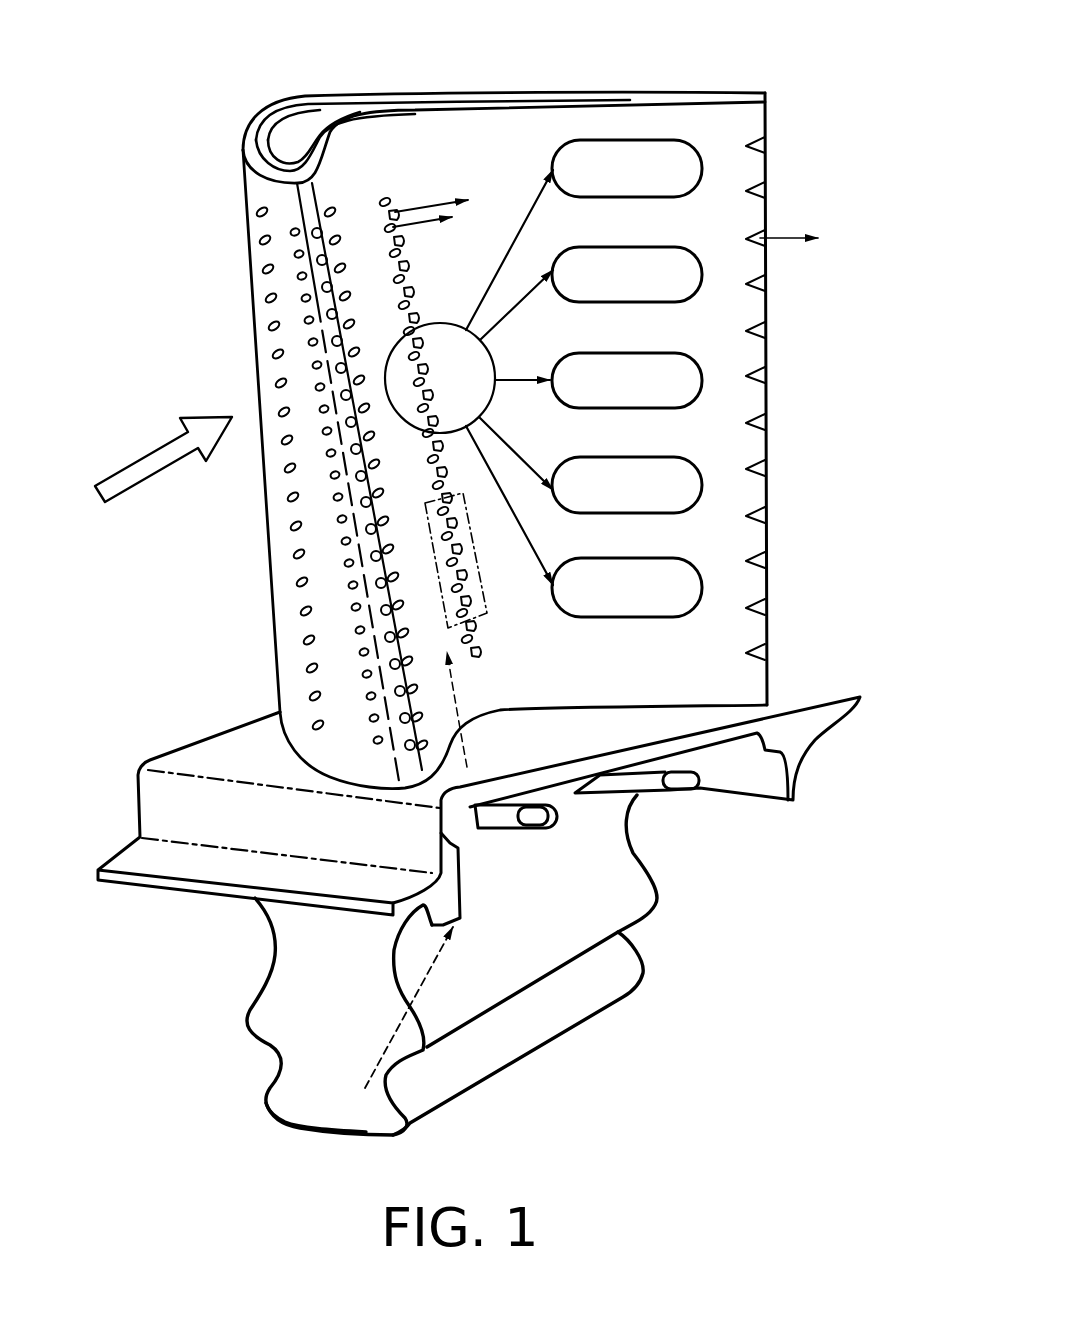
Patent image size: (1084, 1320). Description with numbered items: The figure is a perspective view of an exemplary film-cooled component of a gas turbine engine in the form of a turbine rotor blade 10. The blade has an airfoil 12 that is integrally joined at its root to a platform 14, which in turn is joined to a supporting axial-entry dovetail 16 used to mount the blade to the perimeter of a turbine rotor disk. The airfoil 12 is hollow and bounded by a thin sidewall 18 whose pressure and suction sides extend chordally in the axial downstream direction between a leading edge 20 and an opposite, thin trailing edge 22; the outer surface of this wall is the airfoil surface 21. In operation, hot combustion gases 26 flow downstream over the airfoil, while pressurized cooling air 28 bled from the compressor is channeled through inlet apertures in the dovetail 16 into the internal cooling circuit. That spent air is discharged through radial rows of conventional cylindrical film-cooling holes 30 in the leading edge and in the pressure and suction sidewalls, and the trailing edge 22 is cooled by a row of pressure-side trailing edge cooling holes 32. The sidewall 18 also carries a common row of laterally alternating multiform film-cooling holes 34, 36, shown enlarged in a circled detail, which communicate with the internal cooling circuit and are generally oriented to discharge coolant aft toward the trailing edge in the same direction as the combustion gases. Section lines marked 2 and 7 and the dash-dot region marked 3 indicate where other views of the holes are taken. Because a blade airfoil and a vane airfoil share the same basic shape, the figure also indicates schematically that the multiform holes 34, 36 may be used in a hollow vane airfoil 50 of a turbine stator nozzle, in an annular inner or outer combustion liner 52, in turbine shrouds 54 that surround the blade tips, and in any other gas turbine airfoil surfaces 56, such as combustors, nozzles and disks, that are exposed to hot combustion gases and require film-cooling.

The turbine rotor blade 10 is at (222, 110).
The airfoil 12 is at (272, 598).
The platform 14 is at (213, 740).
The axial-entry dovetail 16 is at (353, 988).
The sidewall 18 is at (479, 164).
The leading edge 20 is at (360, 553).
The airfoil surface 21 is at (512, 128).
The trailing edge 22 is at (767, 447).
The combustion gases 26 is at (166, 478).
The cooling air 28 is at (417, 225).
The film-cooling holes 30 is at (337, 497).
The trailing edge cooling holes 32 is at (753, 192).
The multiform film-cooling hole 34 is at (422, 362).
The multiform film-cooling hole 36 is at (435, 399).
The vane airfoil 50 is at (632, 246).
The combustion liner 52 is at (625, 410).
The turbine shroud 54 is at (630, 456).
The gas turbine airfoil surfaces 56 is at (630, 618).
The section line 2- 2 is at (223, 332).
The detail region 3 is at (478, 620).
The section line 7- 7 is at (683, 628).